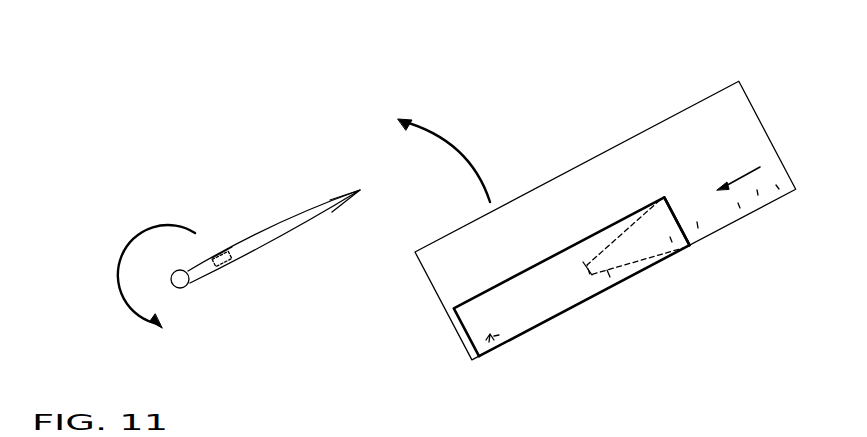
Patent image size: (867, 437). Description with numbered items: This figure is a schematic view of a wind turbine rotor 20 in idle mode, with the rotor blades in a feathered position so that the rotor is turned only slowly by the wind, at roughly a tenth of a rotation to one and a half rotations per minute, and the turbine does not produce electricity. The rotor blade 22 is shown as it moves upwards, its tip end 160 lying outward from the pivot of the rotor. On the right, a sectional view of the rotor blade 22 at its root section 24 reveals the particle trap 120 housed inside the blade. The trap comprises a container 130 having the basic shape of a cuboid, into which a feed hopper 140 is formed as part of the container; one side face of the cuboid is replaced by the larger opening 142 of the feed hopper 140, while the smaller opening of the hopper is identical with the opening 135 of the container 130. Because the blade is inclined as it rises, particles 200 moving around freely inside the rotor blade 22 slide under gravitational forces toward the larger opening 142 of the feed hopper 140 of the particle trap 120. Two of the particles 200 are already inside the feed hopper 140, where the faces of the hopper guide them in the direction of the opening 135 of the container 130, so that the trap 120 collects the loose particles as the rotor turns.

The blade assembly / pivot 20 is at (172, 273).
The rotor blade 22 is at (285, 238).
The root section 24 is at (220, 253).
The particle trap 120 is at (221, 265).
The container 130 is at (572, 287).
The opening 135 is at (597, 258).
The feed hopper 140 is at (608, 273).
The larger opening 142 is at (668, 203).
The blade tip 160 is at (307, 208).
The particles 200 is at (762, 198).